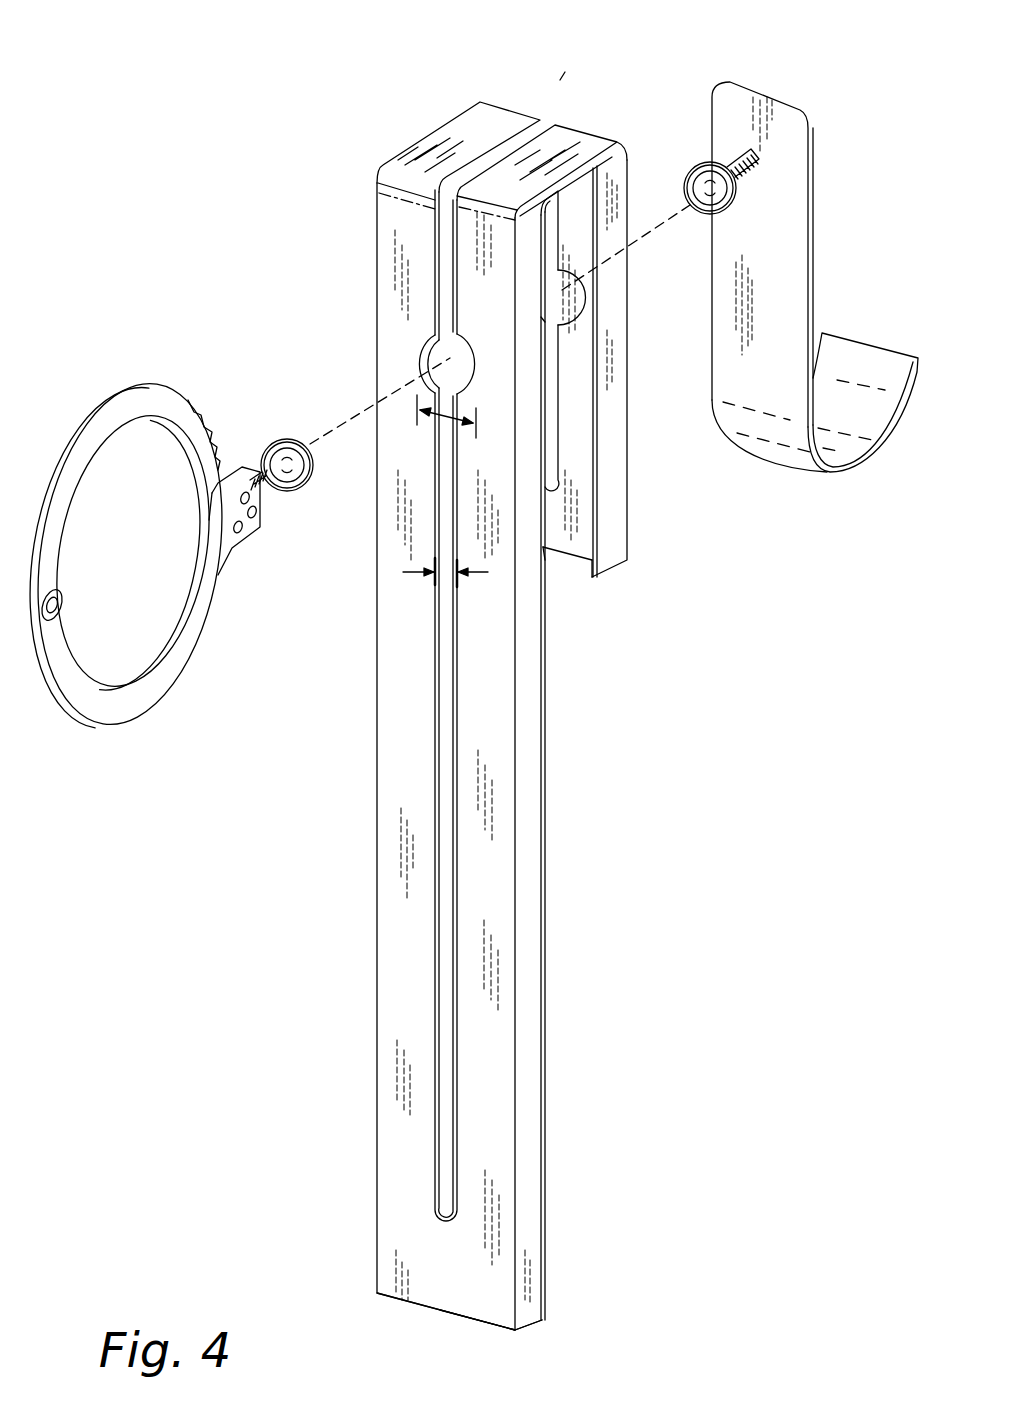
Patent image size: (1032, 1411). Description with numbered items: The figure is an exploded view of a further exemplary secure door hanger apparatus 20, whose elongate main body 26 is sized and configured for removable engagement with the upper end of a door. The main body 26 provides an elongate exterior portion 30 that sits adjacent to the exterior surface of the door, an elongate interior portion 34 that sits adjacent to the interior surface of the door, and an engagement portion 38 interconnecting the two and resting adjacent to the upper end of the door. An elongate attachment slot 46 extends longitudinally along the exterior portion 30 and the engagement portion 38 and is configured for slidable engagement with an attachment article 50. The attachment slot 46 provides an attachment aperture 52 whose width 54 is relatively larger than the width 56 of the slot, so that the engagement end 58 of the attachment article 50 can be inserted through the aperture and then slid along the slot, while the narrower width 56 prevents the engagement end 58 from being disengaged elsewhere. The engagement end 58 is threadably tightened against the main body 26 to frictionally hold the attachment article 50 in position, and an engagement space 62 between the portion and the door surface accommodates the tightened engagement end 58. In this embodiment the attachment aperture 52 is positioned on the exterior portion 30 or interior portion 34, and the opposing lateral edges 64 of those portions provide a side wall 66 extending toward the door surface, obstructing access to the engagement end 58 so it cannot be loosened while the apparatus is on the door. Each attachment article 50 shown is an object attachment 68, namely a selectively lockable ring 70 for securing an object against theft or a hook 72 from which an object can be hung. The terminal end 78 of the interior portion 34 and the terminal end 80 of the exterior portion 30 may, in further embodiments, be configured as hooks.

The secure door hanger apparatus 20 is at (566, 76).
The main body 26 is at (453, 702).
The exterior portion 30 is at (440, 1286).
The interior portion 34 is at (575, 520).
The engagement portion 38 is at (447, 138).
The attachment slot 46 is at (428, 799).
The attachment article 50 is at (468, 433).
The attachment aperture 52 is at (412, 352).
The width of attachment aperture 54 is at (453, 417).
The width of attachment slot 56 is at (447, 600).
The engagement end 58 is at (703, 167).
The engagement space 62 is at (586, 583).
The lateral edge 64 is at (626, 400).
The side wall 66 is at (615, 475).
The object attachment 68 is at (425, 577).
The selectively lockable ring 70 is at (150, 690).
The hook 72 is at (860, 447).
The terminal end of interior portion 78 is at (547, 550).
The terminal end of exterior portion 80 is at (467, 1320).